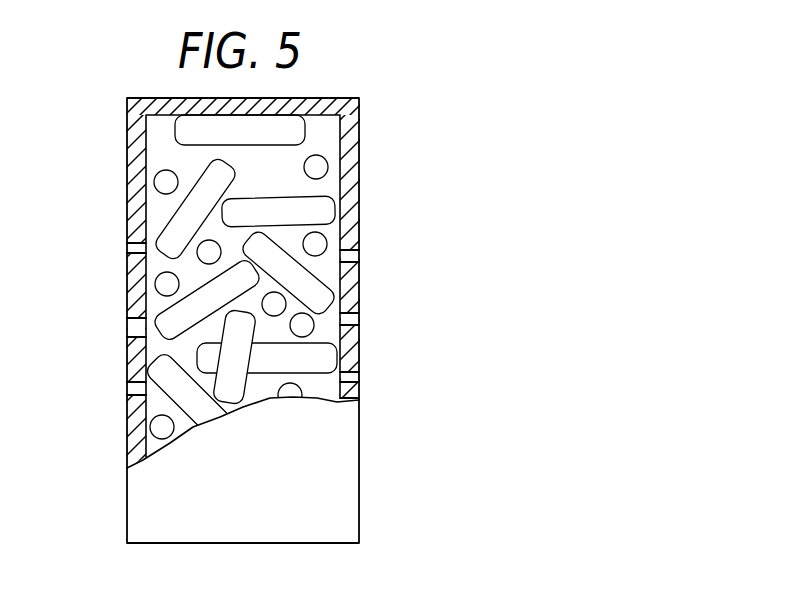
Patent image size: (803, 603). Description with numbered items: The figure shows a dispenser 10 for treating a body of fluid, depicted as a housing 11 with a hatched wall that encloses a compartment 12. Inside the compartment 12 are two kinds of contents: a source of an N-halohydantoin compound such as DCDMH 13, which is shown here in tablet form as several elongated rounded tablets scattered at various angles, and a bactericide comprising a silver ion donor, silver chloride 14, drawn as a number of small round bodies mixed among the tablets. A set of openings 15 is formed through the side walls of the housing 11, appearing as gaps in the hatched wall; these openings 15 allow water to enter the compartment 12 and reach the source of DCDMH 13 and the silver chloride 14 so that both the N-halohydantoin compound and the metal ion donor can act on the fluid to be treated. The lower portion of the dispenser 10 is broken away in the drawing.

The dispenser 10 is at (362, 89).
The housing 11 is at (345, 140).
The compartment 12 is at (250, 328).
The source of N-halohydantoin compound 13 is at (323, 352).
The silver chloride 14 is at (156, 279).
The set of openings 15 is at (130, 385).